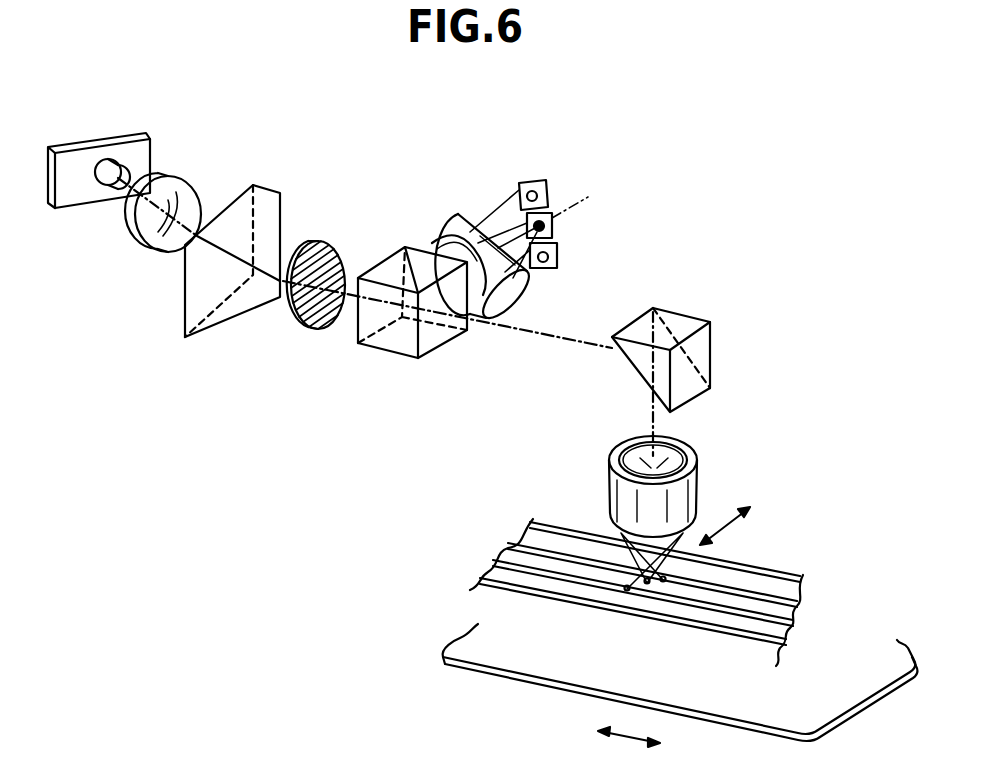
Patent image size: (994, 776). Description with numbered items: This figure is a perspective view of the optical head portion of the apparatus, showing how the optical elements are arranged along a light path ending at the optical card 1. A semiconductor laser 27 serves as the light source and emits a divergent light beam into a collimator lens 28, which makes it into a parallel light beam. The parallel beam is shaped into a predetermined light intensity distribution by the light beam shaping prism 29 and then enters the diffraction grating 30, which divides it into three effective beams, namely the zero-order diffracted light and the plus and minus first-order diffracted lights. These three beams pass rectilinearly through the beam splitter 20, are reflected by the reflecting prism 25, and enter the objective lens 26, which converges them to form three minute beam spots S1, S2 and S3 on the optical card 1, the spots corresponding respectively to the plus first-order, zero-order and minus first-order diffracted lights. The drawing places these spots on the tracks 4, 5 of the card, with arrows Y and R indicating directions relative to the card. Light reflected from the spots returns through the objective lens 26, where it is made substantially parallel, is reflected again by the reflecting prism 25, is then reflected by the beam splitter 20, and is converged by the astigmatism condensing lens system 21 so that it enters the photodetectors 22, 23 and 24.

The optical card 1 is at (527, 685).
The track groove 4 is at (790, 621).
The adjacent track grooves 5 is at (803, 598).
The beam splitter 20 is at (385, 346).
The astigmatism condensing lens system 21 is at (418, 242).
The photodetector 22 is at (548, 192).
The photodetector 23 is at (552, 226).
The photodetector 24 is at (557, 257).
The reflecting prism 25 is at (693, 313).
The objective lens 26 is at (695, 484).
The semiconductor laser 27 is at (137, 134).
The collimator lens 28 is at (192, 180).
The light beam shaping prism 29 is at (272, 197).
The diffraction grating 30 is at (326, 245).
The beam spot S1 is at (627, 592).
The beam spot S2 is at (648, 592).
The beam spot S3 is at (668, 581).
The radial direction arrow Y is at (725, 531).
The rotation direction arrow R is at (629, 750).